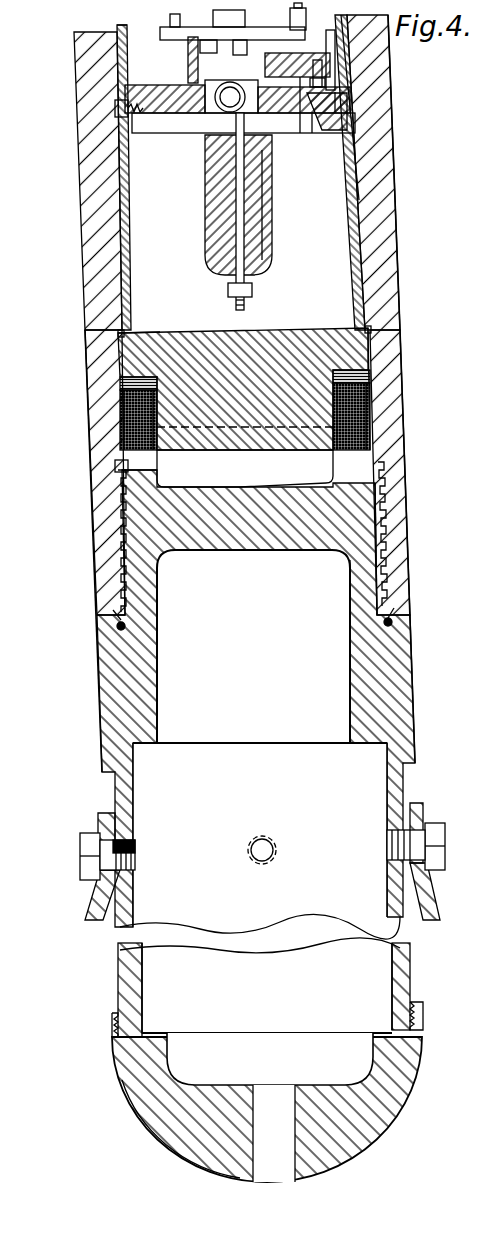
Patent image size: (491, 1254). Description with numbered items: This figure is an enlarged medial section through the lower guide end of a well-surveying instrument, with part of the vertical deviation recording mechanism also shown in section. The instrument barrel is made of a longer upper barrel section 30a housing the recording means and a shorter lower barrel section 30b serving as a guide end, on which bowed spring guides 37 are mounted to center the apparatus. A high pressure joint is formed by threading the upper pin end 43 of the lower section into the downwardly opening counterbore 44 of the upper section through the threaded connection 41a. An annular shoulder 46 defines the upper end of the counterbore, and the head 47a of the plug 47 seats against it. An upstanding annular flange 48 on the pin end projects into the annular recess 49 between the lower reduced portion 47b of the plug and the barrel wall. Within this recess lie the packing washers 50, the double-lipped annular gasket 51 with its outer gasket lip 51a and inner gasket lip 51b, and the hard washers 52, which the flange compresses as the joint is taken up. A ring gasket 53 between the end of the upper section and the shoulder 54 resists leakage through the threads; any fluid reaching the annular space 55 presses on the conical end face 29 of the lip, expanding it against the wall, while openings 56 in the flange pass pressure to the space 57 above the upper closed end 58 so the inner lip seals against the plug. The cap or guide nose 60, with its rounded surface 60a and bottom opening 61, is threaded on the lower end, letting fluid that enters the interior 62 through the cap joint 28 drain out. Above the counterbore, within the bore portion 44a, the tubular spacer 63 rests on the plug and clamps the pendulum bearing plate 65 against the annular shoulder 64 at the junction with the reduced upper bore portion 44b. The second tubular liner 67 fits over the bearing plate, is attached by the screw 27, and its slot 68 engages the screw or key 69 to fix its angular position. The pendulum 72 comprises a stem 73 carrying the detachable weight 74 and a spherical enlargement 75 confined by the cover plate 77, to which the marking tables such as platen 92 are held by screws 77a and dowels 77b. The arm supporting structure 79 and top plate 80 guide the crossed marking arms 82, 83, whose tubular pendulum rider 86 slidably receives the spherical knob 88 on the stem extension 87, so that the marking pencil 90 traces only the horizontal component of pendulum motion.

The screw 27 is at (340, 103).
The cap joint 28 is at (112, 1024).
The conical end face 29 is at (160, 465).
The upper barrel section 30a is at (393, 265).
The lower barrel section 30b is at (395, 692).
The bowed spring guides 37 is at (428, 880).
The threaded connection 41a is at (385, 552).
The upper pin end 43 is at (150, 520).
The counterbore 44 is at (383, 345).
The bore portion 44a is at (118, 250).
The upper bore portion 44b is at (344, 72).
The annular shoulder 46 is at (118, 333).
The plug 47 is at (263, 378).
The head or flange of plug 47a is at (147, 331).
The lower reduced portion of plug 47b is at (228, 430).
The annular flange 48 is at (340, 455).
The annular recess 49 is at (372, 410).
The packing washers 50 is at (120, 383).
The annular gasket 51 is at (130, 440).
The outer gasket lip 51a is at (125, 421).
The inner gasket lip 51b is at (115, 466).
The hard washers 52 is at (122, 408).
The ring gasket 53 is at (118, 627).
The shoulder 54 is at (118, 626).
The annular space 55 is at (120, 487).
The openings 56 is at (380, 470).
The space 57 is at (248, 492).
The upper closed end 58 is at (292, 535).
The cap or guide nose 60 is at (137, 1114).
The rounded surface 60a is at (152, 1147).
The bottom opening 61 is at (274, 1133).
The interior of lower barrel section 62 is at (296, 905).
The tubular spacer 63 is at (126, 222).
The annular shoulder 64 is at (340, 112).
The pendulum bearing plate 65 is at (352, 125).
The second tubular liner 67 is at (120, 56).
The slot 68 is at (115, 106).
The screw or key 69 is at (128, 112).
The pendulum 72 is at (274, 180).
The stem 73 is at (236, 157).
The detachable weight 74 is at (264, 232).
The spherical enlargement 75 is at (231, 96).
The cover plate 77 is at (200, 96).
The screws 77a is at (312, 120).
The dowels 77b is at (336, 60).
The arm supporting structure 79 is at (188, 58).
The top plate 80 is at (168, 26).
The marking arm 82 is at (162, 37).
The marking arm 83 is at (245, 18).
The tubular pendulum rider 86 is at (250, 47).
The upper extension of pendulum stem 87 is at (312, 75).
The spherical knob 88 is at (208, 48).
The marking pencil or stylus 90 is at (306, 25).
The marking table or platen 92 is at (300, 118).